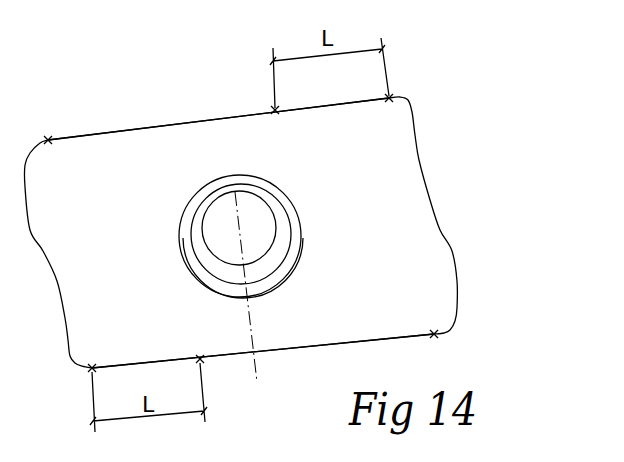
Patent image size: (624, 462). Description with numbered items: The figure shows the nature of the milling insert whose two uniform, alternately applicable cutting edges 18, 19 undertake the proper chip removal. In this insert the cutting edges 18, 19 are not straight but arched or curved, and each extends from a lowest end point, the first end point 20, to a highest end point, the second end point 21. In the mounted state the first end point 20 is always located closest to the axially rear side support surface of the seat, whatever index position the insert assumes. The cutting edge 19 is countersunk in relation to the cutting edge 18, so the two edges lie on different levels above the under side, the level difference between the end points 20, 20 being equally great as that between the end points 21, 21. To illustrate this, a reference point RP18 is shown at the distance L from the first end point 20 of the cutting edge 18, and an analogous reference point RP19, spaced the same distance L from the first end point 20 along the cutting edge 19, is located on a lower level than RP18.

The cutting edge 18 is at (122, 132).
The cutting edge 19 is at (365, 344).
The first end point 20 is at (390, 100).
The second end point 21 is at (48, 143).
The reference point RP18 is at (277, 110).
The reference point RP19 is at (200, 359).